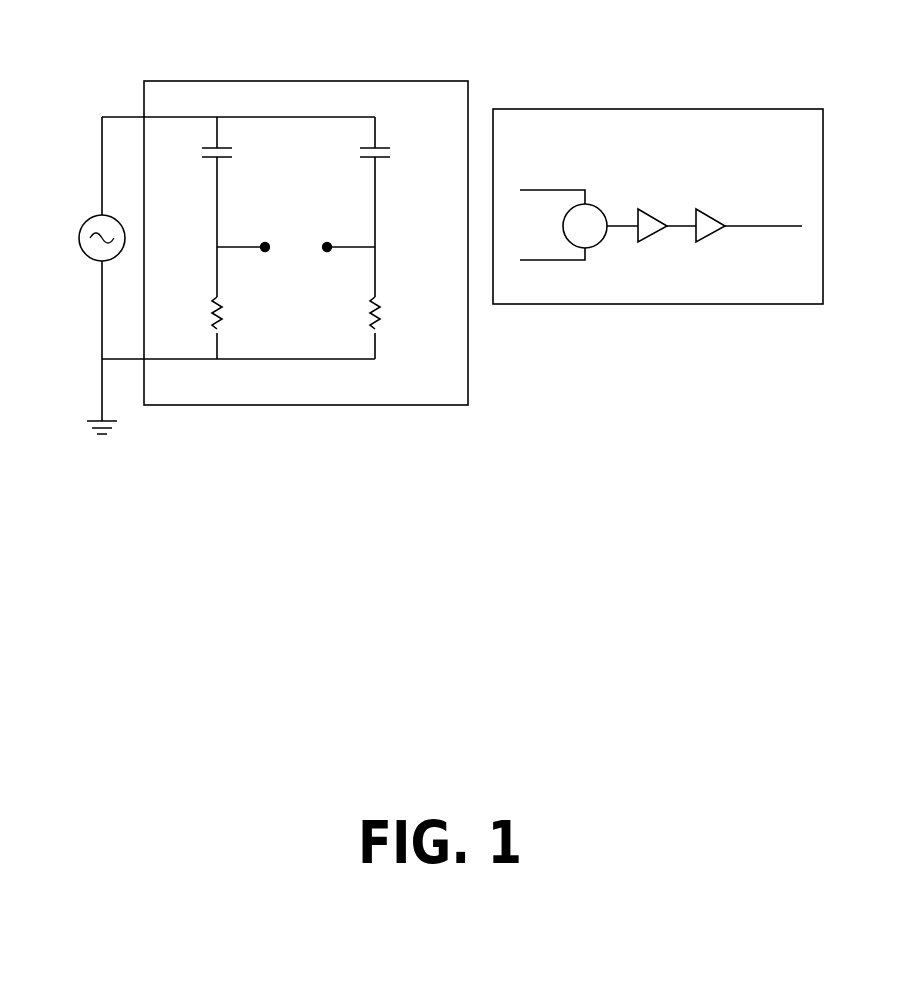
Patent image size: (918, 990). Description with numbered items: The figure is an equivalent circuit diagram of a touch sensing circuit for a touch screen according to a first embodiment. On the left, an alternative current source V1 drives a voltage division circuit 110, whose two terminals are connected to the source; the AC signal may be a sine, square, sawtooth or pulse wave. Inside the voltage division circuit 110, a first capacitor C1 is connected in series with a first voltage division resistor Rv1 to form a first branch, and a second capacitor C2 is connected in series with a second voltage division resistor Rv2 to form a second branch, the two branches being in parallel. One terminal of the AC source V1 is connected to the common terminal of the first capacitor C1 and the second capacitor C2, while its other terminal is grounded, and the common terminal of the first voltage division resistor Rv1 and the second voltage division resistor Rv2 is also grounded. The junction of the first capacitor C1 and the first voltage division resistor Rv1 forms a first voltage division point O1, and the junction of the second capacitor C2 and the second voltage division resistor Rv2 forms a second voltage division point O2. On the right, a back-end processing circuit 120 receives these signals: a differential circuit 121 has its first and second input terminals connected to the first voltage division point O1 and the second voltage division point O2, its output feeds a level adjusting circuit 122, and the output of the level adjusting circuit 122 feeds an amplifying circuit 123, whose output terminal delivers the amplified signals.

The voltage division circuit 110 is at (232, 86).
The back-end processing circuit 120 is at (598, 125).
The differential circuit 121 is at (588, 216).
The level adjusting circuit 122 is at (652, 220).
The amplifying circuit 123 is at (712, 222).
The alternative current (AC) source V1 is at (82, 275).
The first capacitor C1 is at (196, 207).
The second capacitor C2 is at (352, 207).
The first voltage division resistor Rv1 is at (245, 328).
The second voltage division resistor Rv2 is at (405, 328).
The first voltage division point O1 is at (251, 230).
The second voltage division point O2 is at (345, 230).